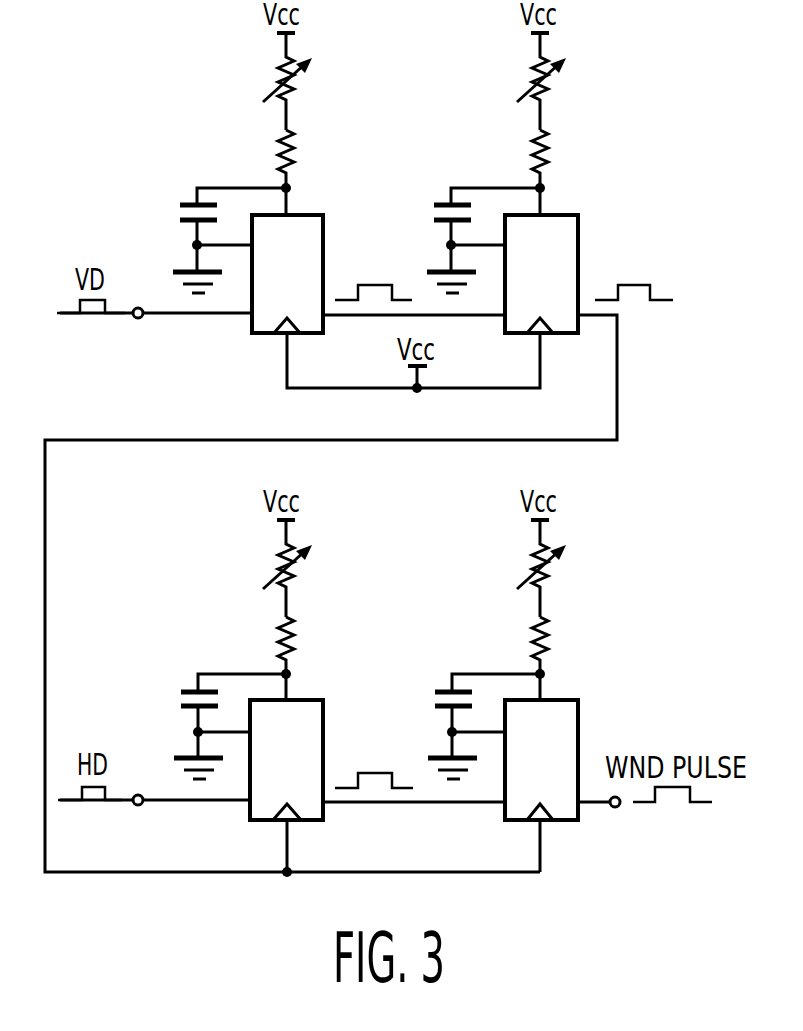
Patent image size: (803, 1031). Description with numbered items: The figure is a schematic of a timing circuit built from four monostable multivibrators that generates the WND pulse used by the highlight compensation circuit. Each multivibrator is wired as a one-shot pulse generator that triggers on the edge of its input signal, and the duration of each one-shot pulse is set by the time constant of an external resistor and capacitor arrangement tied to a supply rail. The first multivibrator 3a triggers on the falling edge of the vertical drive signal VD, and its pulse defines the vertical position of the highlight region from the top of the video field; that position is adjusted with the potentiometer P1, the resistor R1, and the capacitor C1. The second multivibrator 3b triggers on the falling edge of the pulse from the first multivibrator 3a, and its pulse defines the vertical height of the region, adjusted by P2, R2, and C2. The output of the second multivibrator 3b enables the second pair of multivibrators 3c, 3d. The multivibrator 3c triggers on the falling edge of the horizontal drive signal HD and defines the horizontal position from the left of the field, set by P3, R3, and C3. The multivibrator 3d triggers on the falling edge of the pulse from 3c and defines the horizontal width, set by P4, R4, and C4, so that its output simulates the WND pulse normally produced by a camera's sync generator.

The first multivibrator 3a is at (287, 274).
The second multivibrator 3b is at (541, 274).
The first multivibrator of the second pair 3c is at (286, 760).
The second multivibrator of the second pair 3d is at (541, 760).
The potentiometer P1 is at (300, 81).
The potentiometer P2 is at (555, 81).
The potentiometer P3 is at (300, 568).
The potentiometer P4 is at (556, 568).
The resistor R1 is at (304, 172).
The resistor R2 is at (558, 172).
The resistor R3 is at (304, 658).
The resistor R4 is at (558, 658).
The capacitor C1 is at (214, 240).
The capacitor C2 is at (467, 240).
The capacitor C3 is at (213, 726).
The capacitor C4 is at (468, 726).